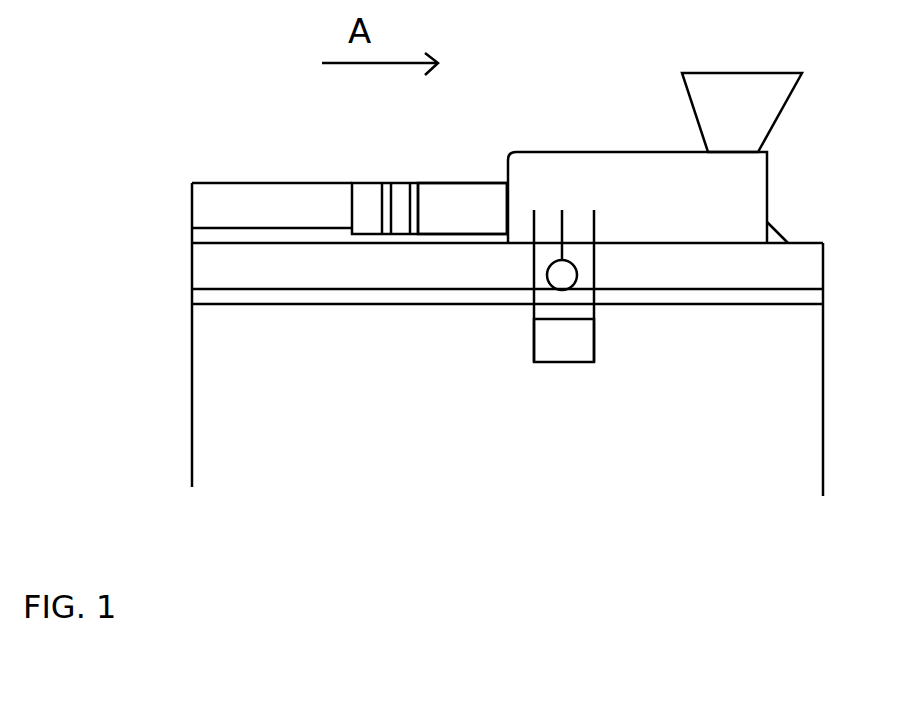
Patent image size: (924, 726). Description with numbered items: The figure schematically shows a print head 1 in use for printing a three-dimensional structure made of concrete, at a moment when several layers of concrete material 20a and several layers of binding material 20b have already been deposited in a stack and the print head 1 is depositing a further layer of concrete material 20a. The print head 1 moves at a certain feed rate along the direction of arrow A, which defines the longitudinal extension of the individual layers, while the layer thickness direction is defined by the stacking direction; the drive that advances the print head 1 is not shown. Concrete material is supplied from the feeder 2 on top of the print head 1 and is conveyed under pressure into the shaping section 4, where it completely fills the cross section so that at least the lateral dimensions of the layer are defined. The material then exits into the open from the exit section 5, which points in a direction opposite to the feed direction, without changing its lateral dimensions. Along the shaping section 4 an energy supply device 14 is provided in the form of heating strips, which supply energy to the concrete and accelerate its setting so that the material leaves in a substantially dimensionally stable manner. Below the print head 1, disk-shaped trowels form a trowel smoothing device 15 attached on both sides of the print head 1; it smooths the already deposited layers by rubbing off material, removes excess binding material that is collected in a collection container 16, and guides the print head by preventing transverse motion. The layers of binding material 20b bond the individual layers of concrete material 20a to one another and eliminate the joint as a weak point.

The print head 1 is at (592, 97).
The feeder 2 is at (783, 108).
The shaping section 4 is at (437, 182).
The exit section 5 is at (350, 185).
The energy supply device 14 is at (412, 182).
The trowel smoothing device 15 is at (558, 264).
The collection container 16 is at (533, 343).
The layer of concrete material 20a is at (192, 203).
The layer of binding material 20b is at (192, 238).